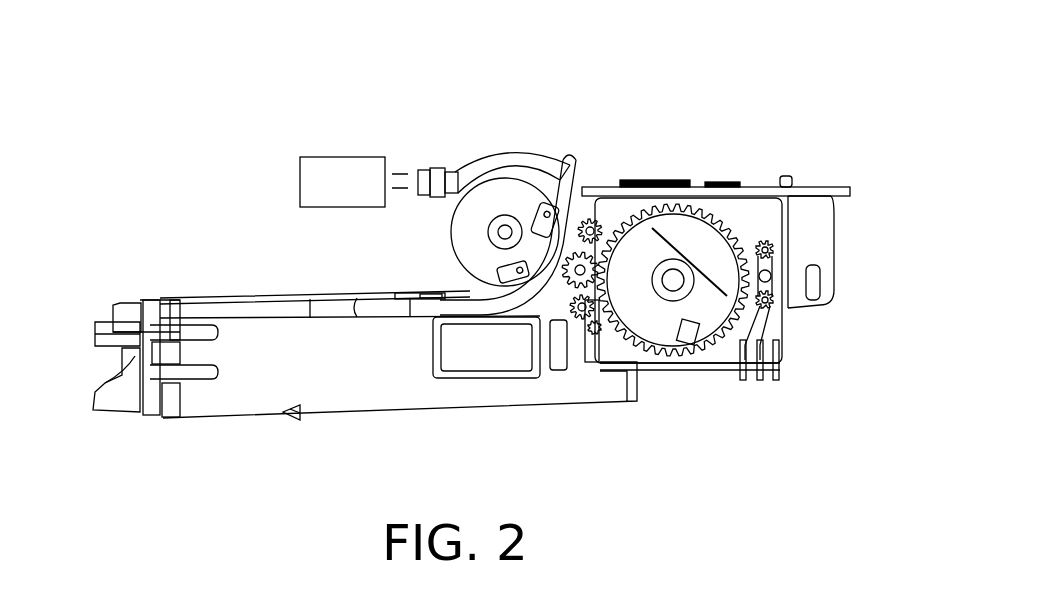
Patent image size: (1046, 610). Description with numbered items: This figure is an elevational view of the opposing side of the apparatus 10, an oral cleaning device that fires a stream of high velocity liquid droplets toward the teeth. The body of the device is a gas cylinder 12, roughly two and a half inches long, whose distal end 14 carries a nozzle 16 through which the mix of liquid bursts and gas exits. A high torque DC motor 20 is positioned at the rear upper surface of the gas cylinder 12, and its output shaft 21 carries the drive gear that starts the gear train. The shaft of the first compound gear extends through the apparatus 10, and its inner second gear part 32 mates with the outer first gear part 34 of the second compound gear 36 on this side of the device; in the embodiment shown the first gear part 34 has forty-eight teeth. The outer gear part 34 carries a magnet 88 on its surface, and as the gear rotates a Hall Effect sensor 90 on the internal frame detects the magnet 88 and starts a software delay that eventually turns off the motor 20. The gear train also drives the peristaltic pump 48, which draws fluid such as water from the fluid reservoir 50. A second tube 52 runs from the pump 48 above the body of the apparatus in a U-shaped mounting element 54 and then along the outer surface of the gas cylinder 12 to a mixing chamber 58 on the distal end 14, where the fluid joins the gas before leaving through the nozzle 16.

The apparatus 10 is at (648, 98).
The gas cylinder 12 is at (368, 412).
The distal end 14 is at (143, 285).
The nozzle 16 is at (100, 337).
The motor 20 is at (460, 208).
The output shaft 21 is at (500, 232).
The second gear part 32 is at (577, 300).
The first gear part 34 is at (700, 205).
The second compound gear 36 is at (685, 372).
The pump 48 is at (490, 150).
The fluid reservoir 50 is at (345, 175).
The second tube 52 is at (250, 298).
The U-shaped mounting element 54 is at (578, 148).
The mixing chamber 58 is at (125, 303).
The magnet 88 is at (688, 334).
The Hall Effect sensor 90 is at (700, 188).